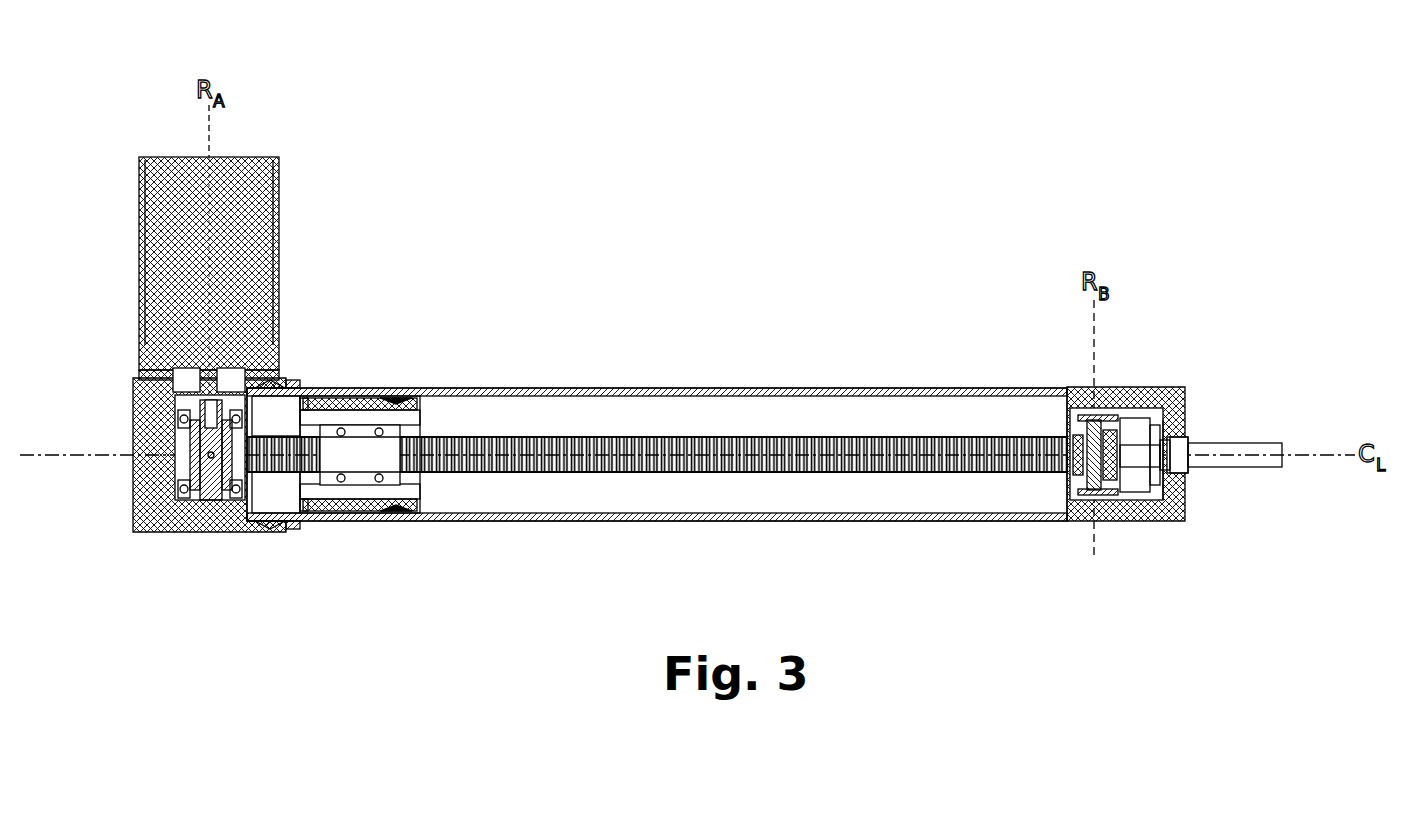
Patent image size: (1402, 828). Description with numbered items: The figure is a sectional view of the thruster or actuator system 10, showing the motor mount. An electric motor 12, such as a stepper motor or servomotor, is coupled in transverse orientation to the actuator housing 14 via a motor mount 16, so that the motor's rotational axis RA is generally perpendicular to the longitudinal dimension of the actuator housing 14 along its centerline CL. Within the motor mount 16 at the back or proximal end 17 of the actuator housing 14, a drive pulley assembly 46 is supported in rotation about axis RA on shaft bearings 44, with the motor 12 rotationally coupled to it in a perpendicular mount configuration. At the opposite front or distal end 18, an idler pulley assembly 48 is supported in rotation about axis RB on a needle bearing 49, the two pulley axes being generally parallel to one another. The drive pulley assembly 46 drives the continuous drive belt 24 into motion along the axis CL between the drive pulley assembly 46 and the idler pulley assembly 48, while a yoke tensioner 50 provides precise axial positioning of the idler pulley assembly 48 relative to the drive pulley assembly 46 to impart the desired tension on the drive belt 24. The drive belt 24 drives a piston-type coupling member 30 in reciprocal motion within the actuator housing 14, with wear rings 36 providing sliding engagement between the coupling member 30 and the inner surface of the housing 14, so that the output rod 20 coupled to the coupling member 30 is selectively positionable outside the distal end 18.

The actuator system 10 is at (1018, 112).
The electric motor 12 is at (284, 233).
The actuator housing 14 is at (822, 520).
The motor mount 16 is at (172, 532).
The proximal end 17 is at (327, 322).
The distal end 18 is at (1048, 308).
The output rod 20 is at (1228, 468).
The drive belt 24 is at (607, 428).
The piston-type coupling member 30 is at (348, 384).
The wear rings 36 is at (394, 384).
The shaft bearings 44 is at (190, 460).
The drive pulley assembly 46 is at (222, 532).
The idler pulley assembly 48 is at (1062, 423).
The needle bearing 49 is at (1070, 522).
The yoke tensioner 50 is at (1140, 416).